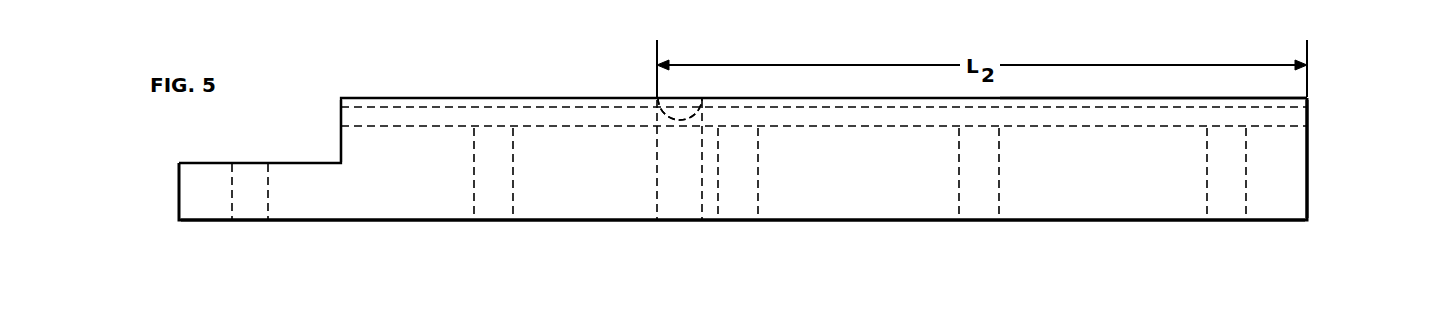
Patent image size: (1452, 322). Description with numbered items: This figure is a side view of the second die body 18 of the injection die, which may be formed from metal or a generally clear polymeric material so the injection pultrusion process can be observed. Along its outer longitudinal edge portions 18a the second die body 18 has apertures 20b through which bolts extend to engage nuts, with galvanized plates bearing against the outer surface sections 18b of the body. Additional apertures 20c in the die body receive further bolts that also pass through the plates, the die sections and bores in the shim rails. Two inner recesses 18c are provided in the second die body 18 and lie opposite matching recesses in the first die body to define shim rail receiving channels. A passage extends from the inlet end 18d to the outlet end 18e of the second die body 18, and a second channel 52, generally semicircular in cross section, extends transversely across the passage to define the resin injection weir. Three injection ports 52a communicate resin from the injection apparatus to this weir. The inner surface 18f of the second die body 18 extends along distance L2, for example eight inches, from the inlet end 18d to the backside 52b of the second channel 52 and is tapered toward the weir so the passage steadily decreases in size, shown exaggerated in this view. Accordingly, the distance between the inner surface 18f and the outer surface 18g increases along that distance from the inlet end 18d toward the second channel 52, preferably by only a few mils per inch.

The second die body 18 is at (1082, 208).
The outer longitudinal edge portions 18a is at (1293, 158).
The outer surface sections 18b is at (1163, 221).
The inner recesses 18c is at (1268, 126).
The inlet end 18d is at (1307, 98).
The outlet end 18e is at (341, 98).
The inner surface 18f is at (1113, 105).
The outer surface 18g is at (880, 221).
The apertures 20b is at (513, 184).
The apertures 20c is at (268, 200).
The second channel 52 is at (681, 118).
The injection ports 52a is at (655, 172).
The backside of the second channel 52b is at (657, 96).